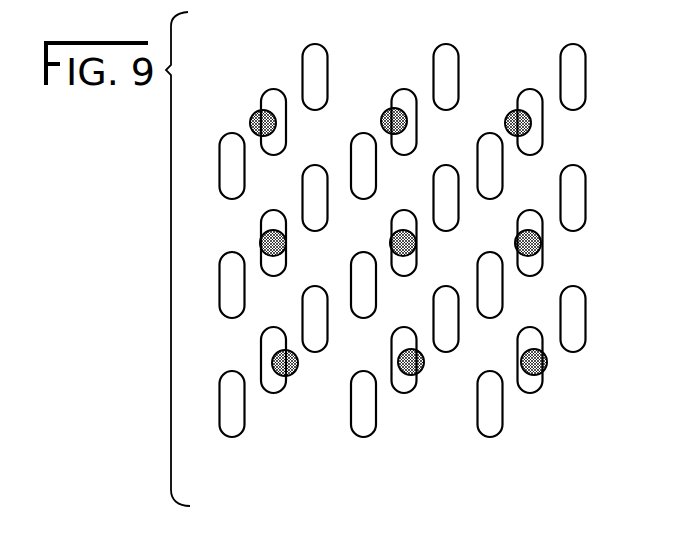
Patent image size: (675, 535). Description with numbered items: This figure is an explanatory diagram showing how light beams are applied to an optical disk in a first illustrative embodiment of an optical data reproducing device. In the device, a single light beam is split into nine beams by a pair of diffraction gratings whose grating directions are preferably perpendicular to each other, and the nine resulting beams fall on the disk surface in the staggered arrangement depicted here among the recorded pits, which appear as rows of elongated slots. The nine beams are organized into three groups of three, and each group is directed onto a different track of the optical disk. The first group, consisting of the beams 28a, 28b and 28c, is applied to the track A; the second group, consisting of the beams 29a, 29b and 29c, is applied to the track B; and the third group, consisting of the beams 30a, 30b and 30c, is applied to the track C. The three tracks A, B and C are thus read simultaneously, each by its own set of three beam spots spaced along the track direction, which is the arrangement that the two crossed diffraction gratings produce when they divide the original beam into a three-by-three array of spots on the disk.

The beam 28a is at (252, 118).
The beam 28b is at (261, 243).
The beam 28c is at (294, 372).
The beam 29a is at (384, 109).
The beam 29b is at (416, 243).
The beam 29c is at (418, 371).
The beam 30a is at (513, 110).
The beam 30b is at (541, 243).
The beam 30c is at (546, 367).
The track A is at (274, 72).
The track B is at (415, 57).
The track C is at (537, 411).